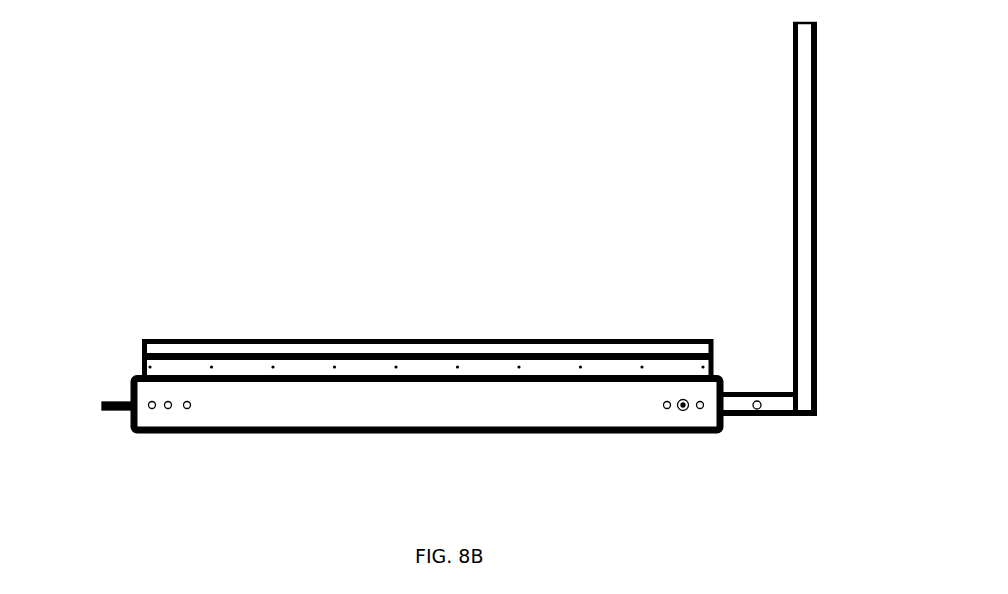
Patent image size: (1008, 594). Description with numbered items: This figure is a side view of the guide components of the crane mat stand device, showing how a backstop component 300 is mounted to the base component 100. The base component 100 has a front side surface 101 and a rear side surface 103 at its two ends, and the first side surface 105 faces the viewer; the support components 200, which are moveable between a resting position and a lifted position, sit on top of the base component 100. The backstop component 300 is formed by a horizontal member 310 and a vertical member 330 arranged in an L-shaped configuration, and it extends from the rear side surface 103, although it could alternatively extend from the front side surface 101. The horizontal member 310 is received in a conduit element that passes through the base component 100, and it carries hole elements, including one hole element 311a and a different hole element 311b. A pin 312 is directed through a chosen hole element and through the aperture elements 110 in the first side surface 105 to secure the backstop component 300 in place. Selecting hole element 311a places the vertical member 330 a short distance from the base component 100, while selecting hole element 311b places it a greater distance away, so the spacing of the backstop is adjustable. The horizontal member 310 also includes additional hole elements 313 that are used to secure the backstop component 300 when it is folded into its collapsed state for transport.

The base component 100 is at (283, 413).
The front side surface 101 is at (133, 408).
The rear side surface 103 is at (722, 414).
The first side surface 105 is at (347, 413).
The aperture elements 110 is at (666, 409).
The support components 200 is at (185, 362).
The backstop component 300 is at (846, 218).
The horizontal member 310 is at (806, 409).
The hole element 311a is at (768, 416).
The hole element 311b is at (722, 394).
The pin 312 is at (686, 409).
The additional hole elements 313 is at (748, 416).
The vertical member 330 is at (800, 314).